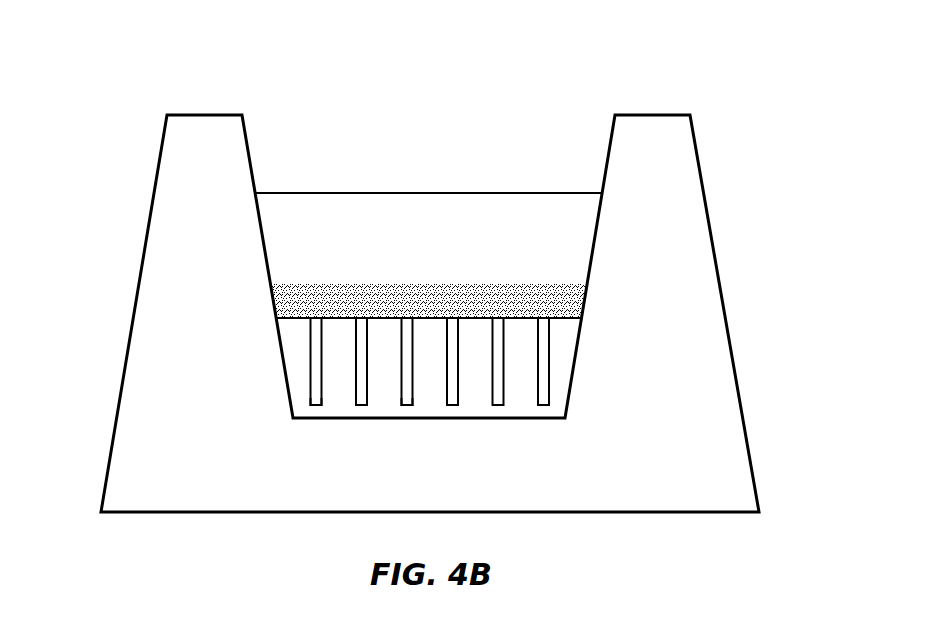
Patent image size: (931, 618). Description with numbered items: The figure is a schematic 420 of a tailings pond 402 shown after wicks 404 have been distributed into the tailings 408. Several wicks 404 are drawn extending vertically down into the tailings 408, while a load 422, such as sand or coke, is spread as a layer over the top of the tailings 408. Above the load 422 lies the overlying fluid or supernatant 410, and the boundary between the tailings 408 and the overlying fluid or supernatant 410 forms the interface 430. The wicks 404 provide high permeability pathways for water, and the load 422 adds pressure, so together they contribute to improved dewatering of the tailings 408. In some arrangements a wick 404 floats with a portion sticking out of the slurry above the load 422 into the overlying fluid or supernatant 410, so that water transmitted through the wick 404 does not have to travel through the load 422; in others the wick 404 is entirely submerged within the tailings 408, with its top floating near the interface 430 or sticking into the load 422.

The tailings pond 402 is at (447, 476).
The wicks 404 is at (408, 406).
The tailings 408 is at (385, 333).
The overlying fluid or supernatant 410 is at (305, 228).
The schematic 420 is at (447, 101).
The load 422 is at (538, 293).
The interface 430 is at (470, 315).